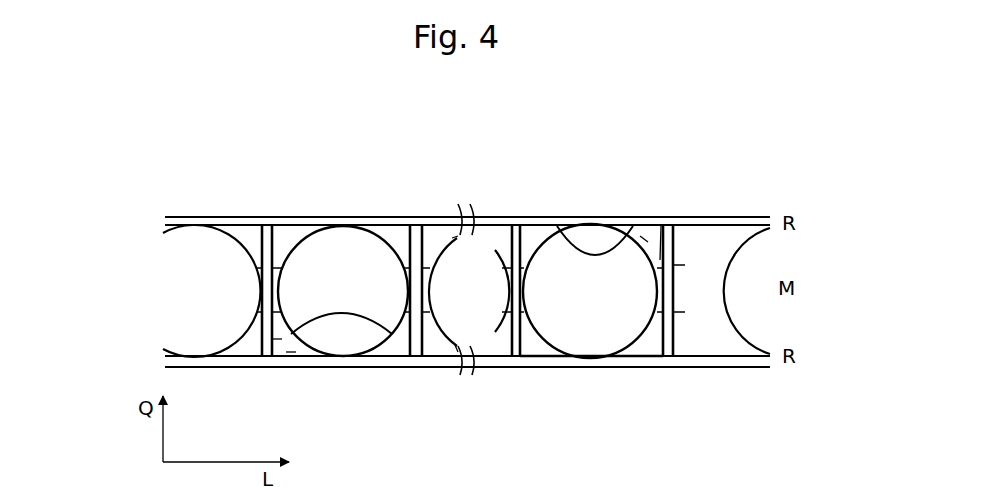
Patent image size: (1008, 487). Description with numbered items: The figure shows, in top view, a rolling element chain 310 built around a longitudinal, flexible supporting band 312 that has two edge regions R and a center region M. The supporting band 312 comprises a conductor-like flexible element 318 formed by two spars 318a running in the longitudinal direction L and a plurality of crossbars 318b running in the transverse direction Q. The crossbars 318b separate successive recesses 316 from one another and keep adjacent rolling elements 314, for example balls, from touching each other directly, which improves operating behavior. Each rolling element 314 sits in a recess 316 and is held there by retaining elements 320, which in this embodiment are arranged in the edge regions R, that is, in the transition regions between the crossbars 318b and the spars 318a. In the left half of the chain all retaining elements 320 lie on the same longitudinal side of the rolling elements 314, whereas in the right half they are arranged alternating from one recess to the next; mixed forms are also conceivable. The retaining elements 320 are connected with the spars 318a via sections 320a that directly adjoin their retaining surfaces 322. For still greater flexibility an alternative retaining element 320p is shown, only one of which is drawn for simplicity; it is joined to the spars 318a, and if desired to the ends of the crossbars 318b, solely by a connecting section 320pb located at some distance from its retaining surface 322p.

The rolling element chain 310 is at (466, 273).
The supporting band 312 is at (220, 220).
The rolling elements 314 is at (590, 322).
The recesses 316 is at (400, 243).
The flexible element 318 is at (327, 222).
The spars 318a is at (383, 362).
The crossbars 318b is at (515, 333).
The retaining elements 320 is at (272, 340).
The sections 320a is at (293, 358).
The retaining element 320p is at (647, 240).
The connecting section 320pb is at (664, 226).
The retaining surfaces 322 is at (377, 335).
The retaining surface 322p is at (563, 232).